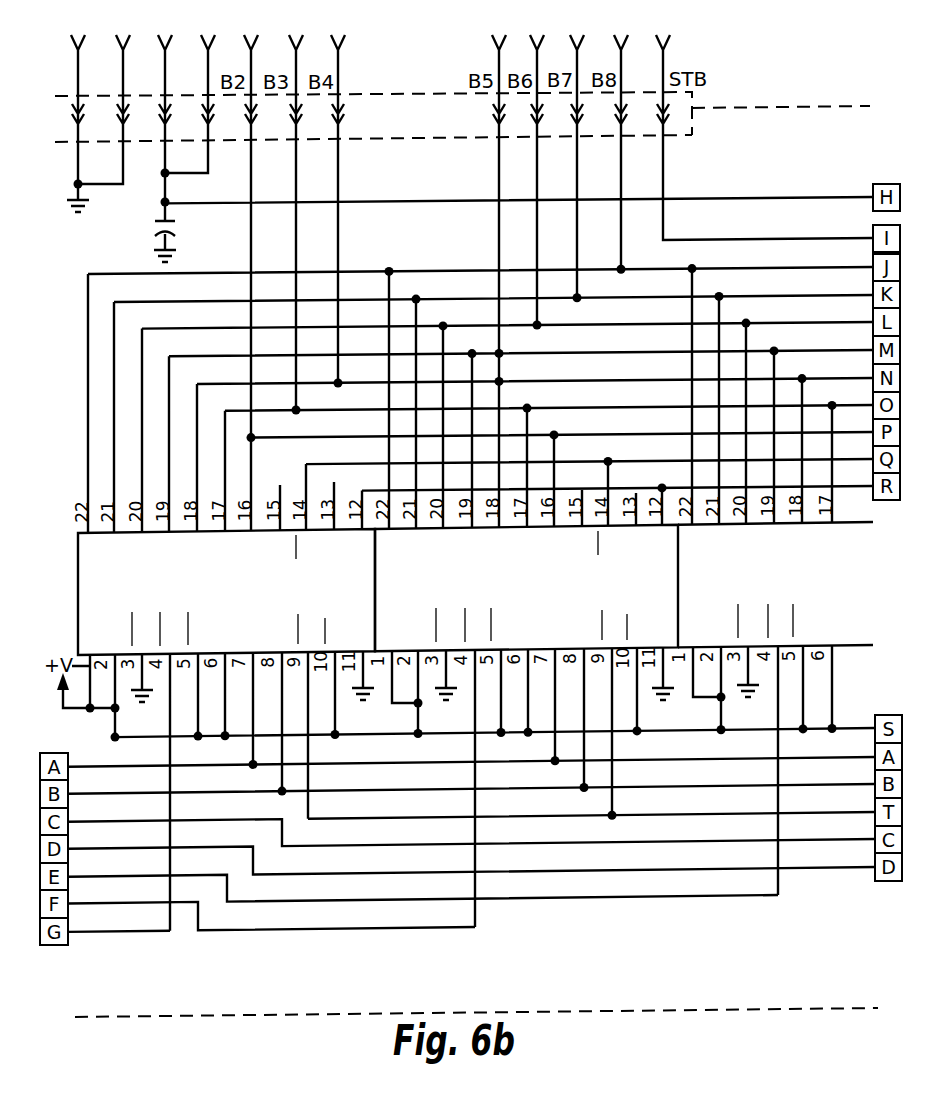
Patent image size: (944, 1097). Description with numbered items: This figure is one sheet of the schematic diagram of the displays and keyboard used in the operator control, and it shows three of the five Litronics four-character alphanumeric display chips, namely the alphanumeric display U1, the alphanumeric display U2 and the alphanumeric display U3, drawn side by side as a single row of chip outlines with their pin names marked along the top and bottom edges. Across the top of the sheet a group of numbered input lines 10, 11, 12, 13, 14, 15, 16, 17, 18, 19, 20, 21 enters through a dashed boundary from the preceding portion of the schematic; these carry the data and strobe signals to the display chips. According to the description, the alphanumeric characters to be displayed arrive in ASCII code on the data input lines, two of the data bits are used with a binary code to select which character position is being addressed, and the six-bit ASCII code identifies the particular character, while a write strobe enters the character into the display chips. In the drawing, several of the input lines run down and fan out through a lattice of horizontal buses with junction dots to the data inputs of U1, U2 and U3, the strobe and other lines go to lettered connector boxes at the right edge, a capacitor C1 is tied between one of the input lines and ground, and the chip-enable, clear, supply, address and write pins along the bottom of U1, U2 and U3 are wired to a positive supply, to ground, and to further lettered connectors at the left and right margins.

The input line 10 is at (69, 123).
The input line 11 is at (104, 109).
The input line 12 is at (155, 128).
The input line 13 is at (190, 104).
The input line 14 (B2) 14 is at (240, 283).
The input line 15 (B3) 15 is at (285, 225).
The input line 16 (B4) 16 is at (328, 211).
The input line 17 (B5) 17 is at (488, 281).
The input line 18 (B6) 18 is at (526, 182).
The input line 19 (B7) 19 is at (566, 168).
The input line 20 (B8) 20 is at (608, 154).
The input line 21 (STB) 21 is at (753, 137).
The capacitor C1 is at (179, 238).
The alphanumeric display U1 is at (227, 592).
The alphanumeric display U2 is at (526, 588).
The alphanumeric display U3 is at (775, 584).